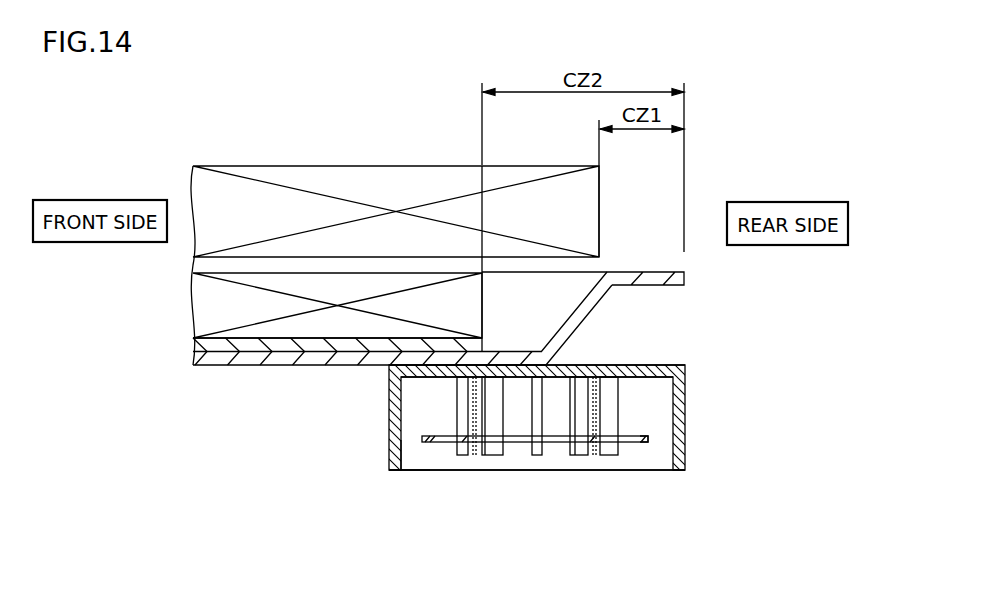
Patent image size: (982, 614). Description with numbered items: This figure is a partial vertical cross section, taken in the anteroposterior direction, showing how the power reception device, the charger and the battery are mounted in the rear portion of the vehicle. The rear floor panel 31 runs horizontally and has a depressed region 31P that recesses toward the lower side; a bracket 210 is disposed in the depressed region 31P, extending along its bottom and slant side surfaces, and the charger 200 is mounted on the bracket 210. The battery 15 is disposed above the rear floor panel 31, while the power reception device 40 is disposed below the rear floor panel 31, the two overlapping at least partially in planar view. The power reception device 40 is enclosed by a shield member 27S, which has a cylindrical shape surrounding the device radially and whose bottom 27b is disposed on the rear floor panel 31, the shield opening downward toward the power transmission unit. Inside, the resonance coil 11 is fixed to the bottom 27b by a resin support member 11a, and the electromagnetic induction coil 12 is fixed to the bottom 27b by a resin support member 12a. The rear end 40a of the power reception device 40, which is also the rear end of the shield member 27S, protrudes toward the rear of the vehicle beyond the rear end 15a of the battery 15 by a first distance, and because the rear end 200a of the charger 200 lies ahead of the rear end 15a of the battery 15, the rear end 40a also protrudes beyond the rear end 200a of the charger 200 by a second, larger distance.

The battery 15 is at (369, 182).
The rear end of battery 15a is at (599, 202).
The charger 200 is at (307, 322).
The rear end of charger 200a is at (484, 308).
The bracket 210 is at (248, 343).
The rear floor panel 31 is at (643, 276).
The depressed region 31P is at (507, 350).
The bottom of shield member 27b is at (627, 364).
The shield member 27S is at (402, 445).
The power reception device 40 is at (488, 476).
The rear end of power reception device 40a is at (687, 425).
The resonance coil 11 is at (607, 440).
The support member 11a is at (583, 410).
The electromagnetic induction coil 12 is at (643, 442).
The support member 12a is at (612, 410).